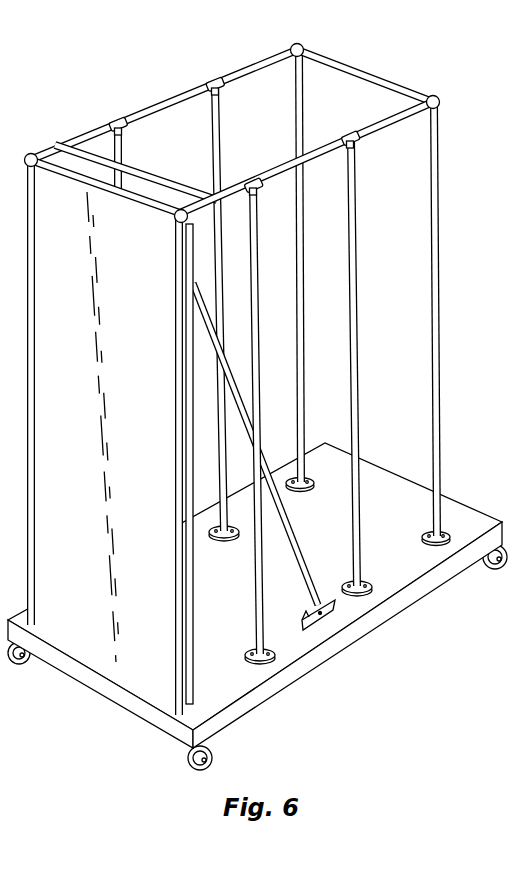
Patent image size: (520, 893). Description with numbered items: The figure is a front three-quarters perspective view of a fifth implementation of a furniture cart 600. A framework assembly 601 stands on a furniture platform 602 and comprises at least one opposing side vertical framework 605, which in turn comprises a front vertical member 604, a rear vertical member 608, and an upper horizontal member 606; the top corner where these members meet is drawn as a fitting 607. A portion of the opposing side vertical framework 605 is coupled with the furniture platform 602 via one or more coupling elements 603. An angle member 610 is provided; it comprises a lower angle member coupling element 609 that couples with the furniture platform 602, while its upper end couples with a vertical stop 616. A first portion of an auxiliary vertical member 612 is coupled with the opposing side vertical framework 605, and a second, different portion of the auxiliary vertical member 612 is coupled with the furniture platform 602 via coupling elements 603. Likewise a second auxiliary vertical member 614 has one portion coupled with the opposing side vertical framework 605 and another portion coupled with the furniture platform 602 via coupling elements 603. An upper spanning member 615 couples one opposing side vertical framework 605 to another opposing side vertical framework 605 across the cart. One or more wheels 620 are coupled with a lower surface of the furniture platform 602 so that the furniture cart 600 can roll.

The furniture cart 600 is at (263, 403).
The framework assembly 601 is at (229, 388).
The furniture platform 602 is at (382, 613).
The coupling element 603 is at (441, 541).
The front vertical member 604 is at (442, 195).
The opposing side vertical framework 605 is at (138, 98).
The upper horizontal member 606 is at (383, 122).
The elbow connector 607 is at (441, 98).
The rear vertical member 608 is at (183, 650).
The lower angle member coupling element 609 is at (333, 630).
The angle member 610 is at (290, 542).
The auxiliary vertical member 612 is at (260, 290).
The second auxiliary vertical member 614 is at (356, 322).
The upper spanning member 615 is at (335, 63).
The vertical stop 616 is at (100, 617).
The wheel 620 is at (216, 754).